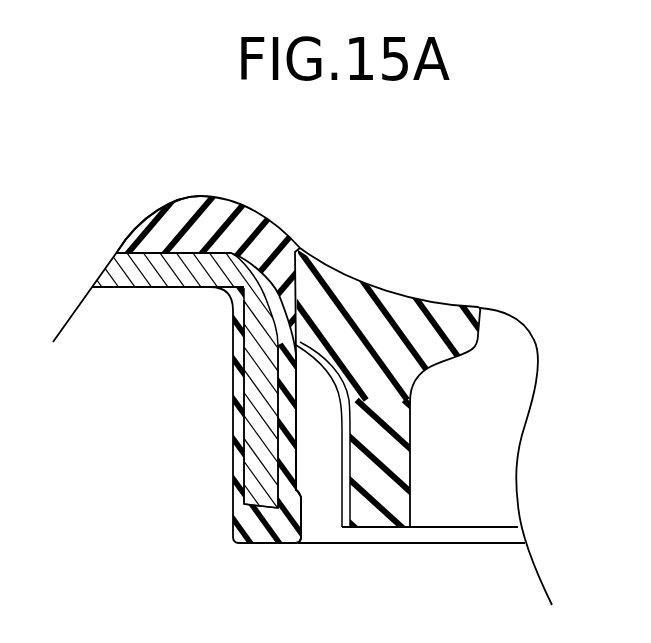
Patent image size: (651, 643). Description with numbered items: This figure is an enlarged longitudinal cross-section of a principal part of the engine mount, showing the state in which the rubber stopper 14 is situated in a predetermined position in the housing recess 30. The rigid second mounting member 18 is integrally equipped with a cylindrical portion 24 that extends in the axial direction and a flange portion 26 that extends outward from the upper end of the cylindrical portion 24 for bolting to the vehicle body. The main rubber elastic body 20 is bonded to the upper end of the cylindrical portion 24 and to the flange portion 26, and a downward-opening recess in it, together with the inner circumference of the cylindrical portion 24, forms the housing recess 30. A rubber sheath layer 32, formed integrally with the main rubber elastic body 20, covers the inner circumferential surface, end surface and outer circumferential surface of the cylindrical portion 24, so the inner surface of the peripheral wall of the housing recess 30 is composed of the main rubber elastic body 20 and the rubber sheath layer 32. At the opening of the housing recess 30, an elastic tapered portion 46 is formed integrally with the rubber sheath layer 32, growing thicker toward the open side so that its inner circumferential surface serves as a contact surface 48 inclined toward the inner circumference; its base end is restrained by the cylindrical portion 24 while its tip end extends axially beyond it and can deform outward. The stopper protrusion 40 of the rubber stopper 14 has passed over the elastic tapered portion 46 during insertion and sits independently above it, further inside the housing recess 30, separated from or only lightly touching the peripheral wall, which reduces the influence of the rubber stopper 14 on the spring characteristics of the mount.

The rubber stopper 14 is at (450, 534).
The second mounting member 18 is at (158, 249).
The main rubber elastic body 20 is at (233, 218).
The cylindrical portion 24 is at (260, 362).
The flange portion 26 is at (130, 273).
The housing recess 30 is at (300, 380).
The rubber sheath layer 32 is at (287, 332).
The stopper protrusion 40 is at (317, 278).
The elastic tapered portion 46 is at (296, 467).
The contact surface 48 is at (301, 498).